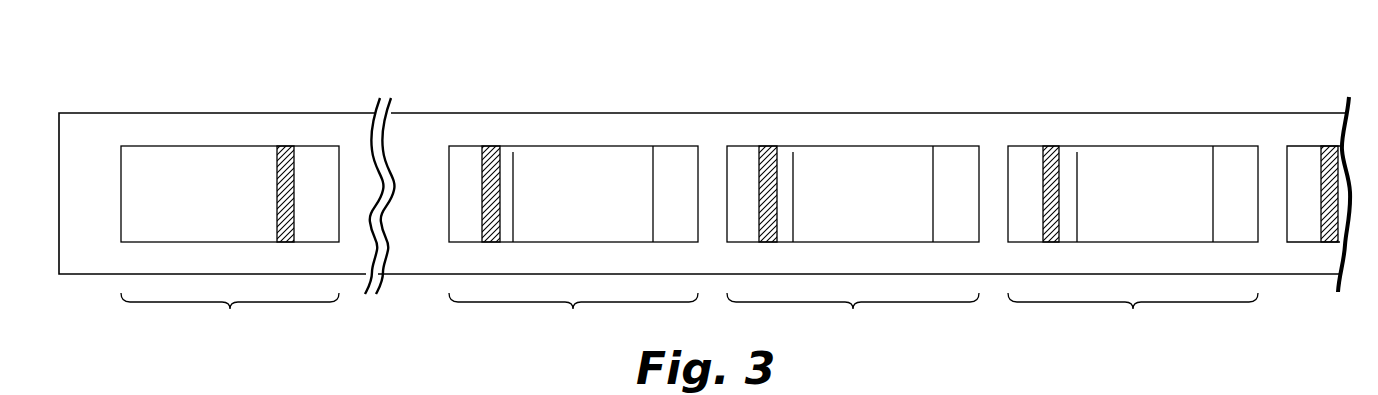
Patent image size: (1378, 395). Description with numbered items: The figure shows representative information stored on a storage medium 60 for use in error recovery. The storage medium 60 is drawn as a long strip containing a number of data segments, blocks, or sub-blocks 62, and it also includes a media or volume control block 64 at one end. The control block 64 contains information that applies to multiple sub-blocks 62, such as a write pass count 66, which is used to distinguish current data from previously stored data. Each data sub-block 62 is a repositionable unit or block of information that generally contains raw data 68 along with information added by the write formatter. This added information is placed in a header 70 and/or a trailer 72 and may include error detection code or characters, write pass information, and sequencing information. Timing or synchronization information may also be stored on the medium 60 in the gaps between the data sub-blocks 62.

The storage medium 60 is at (85, 127).
The data sub-blocks 62 is at (895, 188).
The media or volume control block 64 is at (230, 248).
The write pass count 66 is at (292, 173).
The raw data 68 is at (588, 158).
The header 70 is at (463, 143).
The trailer 72 is at (675, 158).